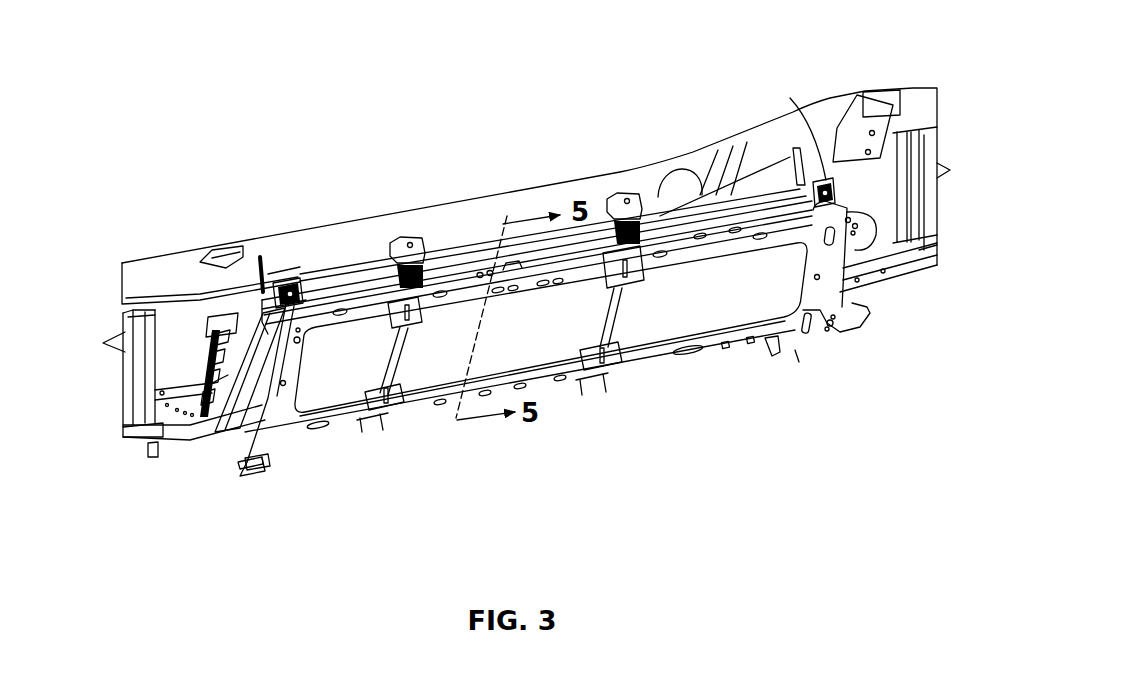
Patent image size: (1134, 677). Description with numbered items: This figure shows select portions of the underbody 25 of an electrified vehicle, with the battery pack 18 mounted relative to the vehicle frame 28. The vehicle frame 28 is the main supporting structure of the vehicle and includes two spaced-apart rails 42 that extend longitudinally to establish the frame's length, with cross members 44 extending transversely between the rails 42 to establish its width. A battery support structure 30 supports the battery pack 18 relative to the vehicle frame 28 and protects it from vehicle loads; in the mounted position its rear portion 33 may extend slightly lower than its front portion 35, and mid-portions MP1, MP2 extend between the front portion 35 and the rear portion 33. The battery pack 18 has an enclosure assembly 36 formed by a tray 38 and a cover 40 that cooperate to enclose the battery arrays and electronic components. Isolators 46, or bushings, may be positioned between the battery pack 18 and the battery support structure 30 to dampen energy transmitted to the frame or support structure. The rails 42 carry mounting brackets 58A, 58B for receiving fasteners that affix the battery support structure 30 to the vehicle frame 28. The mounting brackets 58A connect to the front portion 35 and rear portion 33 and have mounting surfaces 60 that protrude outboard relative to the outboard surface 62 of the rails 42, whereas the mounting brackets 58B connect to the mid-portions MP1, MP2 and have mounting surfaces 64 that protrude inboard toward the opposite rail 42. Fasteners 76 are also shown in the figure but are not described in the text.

The battery pack 18 is at (193, 418).
The underbody 25 is at (888, 280).
The vehicle frame 28 is at (552, 110).
The battery support structure 30 is at (308, 440).
The rear portion 33 is at (834, 350).
The front portion 35 is at (252, 476).
The enclosure assembly 36 is at (210, 340).
The tray 38 is at (252, 317).
The cover 40 is at (210, 250).
The rails 42 is at (548, 207).
The cross members 44 is at (125, 402).
The isolators 46 is at (647, 190).
The mounting brackets 58A is at (284, 257).
The mounting brackets 58B is at (397, 233).
The mounting surfaces 60 is at (290, 282).
The outboard surface 62 is at (690, 193).
The mounting surfaces 64 is at (400, 240).
The fastener 76 is at (303, 280).
The mid-portion MP1 is at (368, 463).
The mid-portion MP2 is at (577, 436).